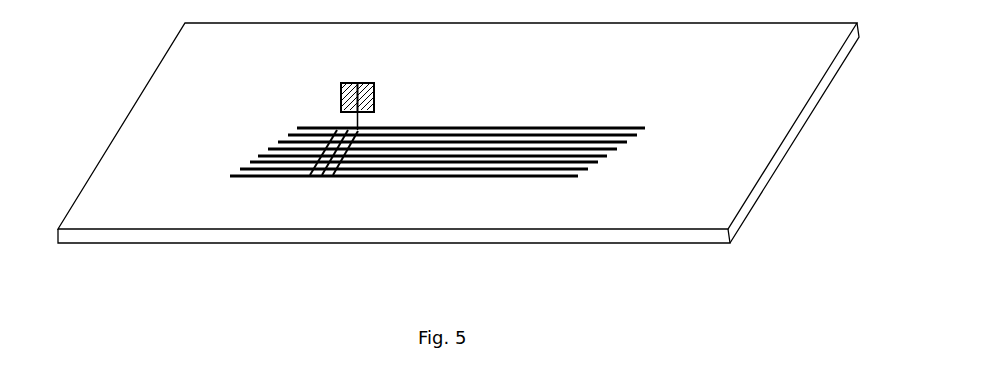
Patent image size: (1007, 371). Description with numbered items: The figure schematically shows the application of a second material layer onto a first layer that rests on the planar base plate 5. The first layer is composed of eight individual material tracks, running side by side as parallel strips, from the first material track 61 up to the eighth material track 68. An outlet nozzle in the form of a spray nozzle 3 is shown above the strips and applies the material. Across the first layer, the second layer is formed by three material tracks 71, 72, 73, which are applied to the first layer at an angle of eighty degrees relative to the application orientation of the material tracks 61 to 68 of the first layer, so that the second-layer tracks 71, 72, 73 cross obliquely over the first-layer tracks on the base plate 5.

The spray nozzle 3 is at (340, 98).
The planar base plate 5 is at (299, 243).
The material track 61 is at (220, 176).
The material track 68 is at (290, 128).
The material track 71 is at (316, 170).
The material track 72 is at (331, 170).
The material track 73 is at (345, 170).